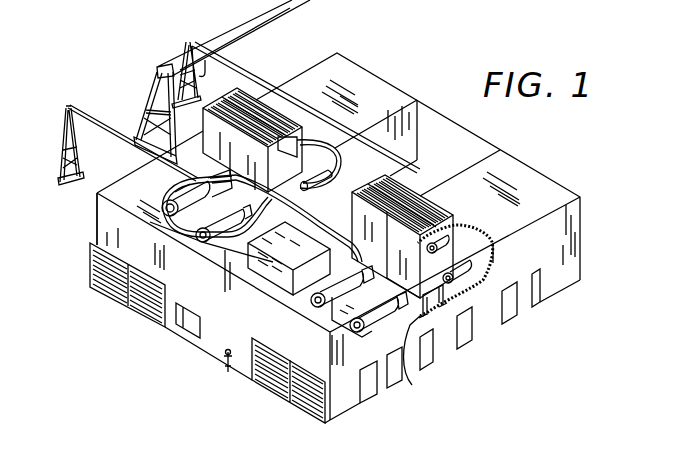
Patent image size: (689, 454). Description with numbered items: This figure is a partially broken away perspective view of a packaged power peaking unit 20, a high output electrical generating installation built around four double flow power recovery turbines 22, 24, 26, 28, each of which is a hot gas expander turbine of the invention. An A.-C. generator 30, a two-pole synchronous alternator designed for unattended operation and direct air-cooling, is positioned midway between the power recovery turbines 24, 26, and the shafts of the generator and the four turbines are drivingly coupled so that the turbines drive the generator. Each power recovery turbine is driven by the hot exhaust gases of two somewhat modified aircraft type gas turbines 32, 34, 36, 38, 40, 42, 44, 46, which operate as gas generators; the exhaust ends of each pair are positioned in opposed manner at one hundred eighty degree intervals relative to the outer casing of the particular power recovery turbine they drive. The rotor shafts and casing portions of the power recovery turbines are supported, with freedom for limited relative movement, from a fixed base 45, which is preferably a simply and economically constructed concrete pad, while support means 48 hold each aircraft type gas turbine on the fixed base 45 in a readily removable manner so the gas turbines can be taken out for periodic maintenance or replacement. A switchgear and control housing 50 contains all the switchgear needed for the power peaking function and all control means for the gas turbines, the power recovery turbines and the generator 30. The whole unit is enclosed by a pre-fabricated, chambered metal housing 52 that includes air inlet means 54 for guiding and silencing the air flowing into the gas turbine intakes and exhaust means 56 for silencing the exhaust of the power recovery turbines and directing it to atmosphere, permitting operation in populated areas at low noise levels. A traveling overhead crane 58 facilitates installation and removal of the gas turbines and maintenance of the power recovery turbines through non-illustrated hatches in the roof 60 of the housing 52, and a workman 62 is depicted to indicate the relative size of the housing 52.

The packaged power peaking unit 20 is at (392, 79).
The double flow power recovery turbine 22 is at (222, 186).
The double flow power recovery turbine 24 is at (273, 208).
The double flow power recovery turbine 26 is at (360, 254).
The double flow power recovery turbine 28 is at (405, 287).
The A.-C. generator 30 is at (238, 250).
The aircraft type gas turbine 32 is at (177, 188).
The aircraft type gas turbine 34 is at (305, 140).
The aircraft type gas turbine 36 is at (180, 230).
The aircraft type gas turbine 38 is at (333, 182).
The aircraft type gas turbine 40 is at (307, 283).
The aircraft type gas turbine 42 is at (470, 233).
The aircraft type gas turbine 44 is at (372, 335).
The fixed base 45 is at (428, 163).
The aircraft type gas turbine 46 is at (492, 250).
The support means 48 is at (170, 208).
The switchgear and control housing 50 is at (272, 272).
The chambered metal housing 52 is at (207, 340).
The air inlet means 54 is at (108, 291).
The exhaust means 56 is at (283, 120).
The traveling overhead crane 58 is at (164, 68).
The roof 60 is at (97, 193).
The workman 62 is at (228, 362).